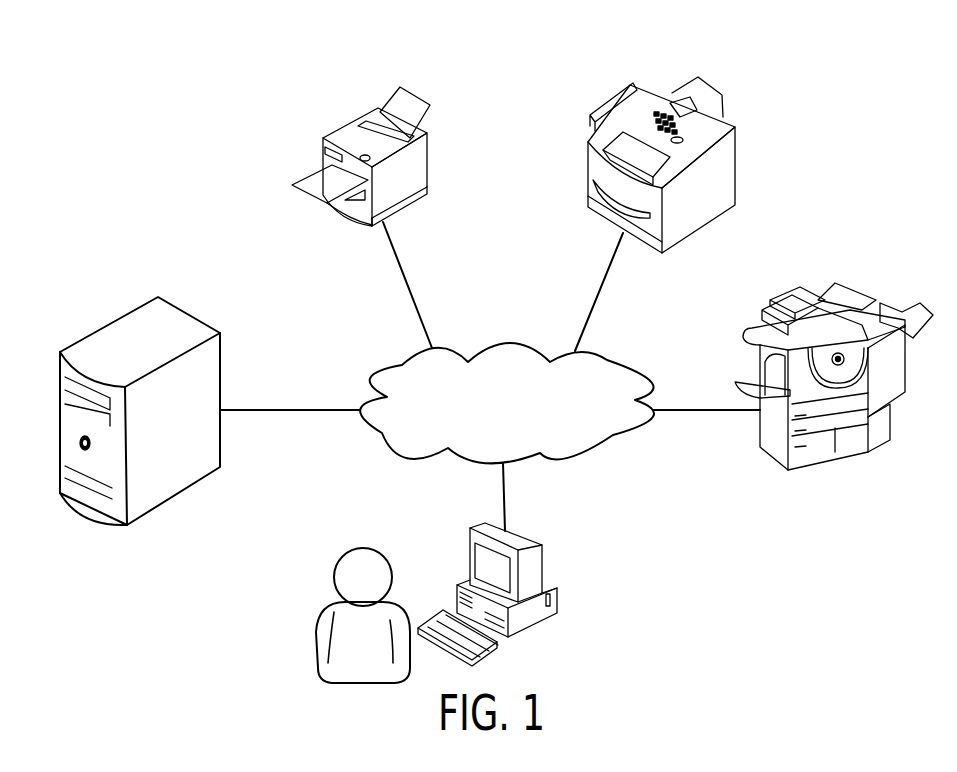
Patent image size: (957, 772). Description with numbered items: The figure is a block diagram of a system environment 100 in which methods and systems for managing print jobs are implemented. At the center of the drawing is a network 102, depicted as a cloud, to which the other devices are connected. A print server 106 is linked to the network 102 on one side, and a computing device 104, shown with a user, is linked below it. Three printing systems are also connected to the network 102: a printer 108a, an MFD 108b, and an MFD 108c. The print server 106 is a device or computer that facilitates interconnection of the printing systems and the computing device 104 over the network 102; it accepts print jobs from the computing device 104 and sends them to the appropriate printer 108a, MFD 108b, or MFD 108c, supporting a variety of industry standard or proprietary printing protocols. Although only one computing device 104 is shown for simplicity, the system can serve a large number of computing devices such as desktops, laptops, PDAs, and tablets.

The system environment 100 is at (881, 88).
The network 102 is at (610, 356).
The computing device 104 is at (527, 538).
The print server 106 is at (182, 312).
The printer 108a is at (867, 296).
The MFD 108b is at (723, 120).
The MFD 108c is at (427, 143).